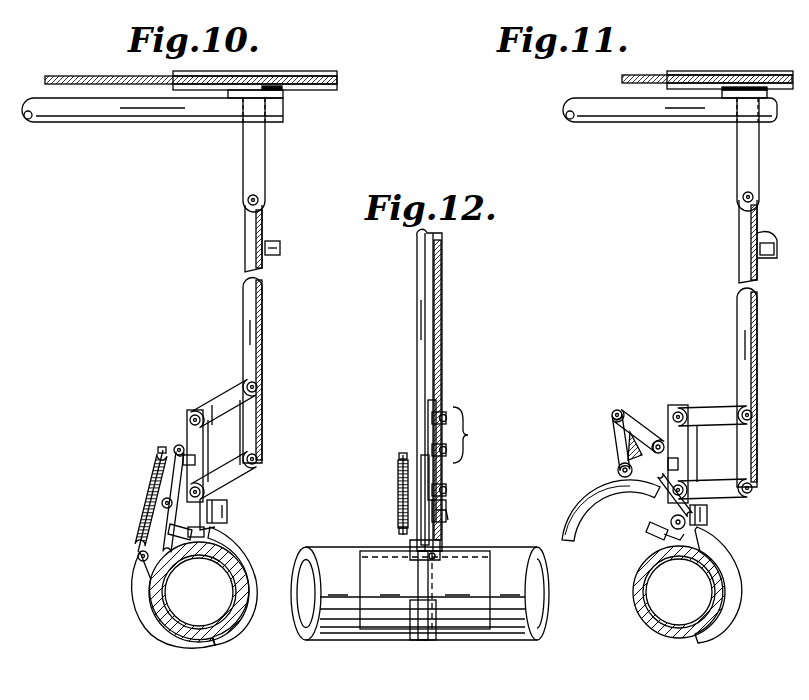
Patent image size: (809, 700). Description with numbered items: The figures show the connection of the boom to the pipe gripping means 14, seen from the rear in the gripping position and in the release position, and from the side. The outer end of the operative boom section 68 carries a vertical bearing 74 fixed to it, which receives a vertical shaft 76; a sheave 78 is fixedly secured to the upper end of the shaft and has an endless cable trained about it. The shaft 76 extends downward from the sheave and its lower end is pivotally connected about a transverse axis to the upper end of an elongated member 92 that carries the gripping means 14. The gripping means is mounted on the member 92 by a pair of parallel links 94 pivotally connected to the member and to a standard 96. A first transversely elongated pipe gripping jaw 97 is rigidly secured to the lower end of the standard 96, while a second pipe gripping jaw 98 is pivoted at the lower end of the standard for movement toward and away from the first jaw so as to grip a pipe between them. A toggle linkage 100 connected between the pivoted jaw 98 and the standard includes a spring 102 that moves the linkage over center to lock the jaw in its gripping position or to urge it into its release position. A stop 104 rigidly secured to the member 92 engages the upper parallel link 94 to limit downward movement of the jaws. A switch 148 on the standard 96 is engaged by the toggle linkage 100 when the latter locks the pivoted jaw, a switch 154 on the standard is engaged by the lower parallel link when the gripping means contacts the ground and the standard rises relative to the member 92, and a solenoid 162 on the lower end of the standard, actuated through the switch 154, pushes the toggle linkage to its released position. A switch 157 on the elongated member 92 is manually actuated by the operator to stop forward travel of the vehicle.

In FIG. 10, the gripping means 14 is at (236, 538).
In FIG. 12, the gripping means 14 is at (460, 541).
In FIG. 11, the gripping means 14 is at (732, 539).
In FIG. 10, the operative boom section 68 is at (66, 122).
In FIG. 11, the operative boom section 68 is at (600, 122).
In FIG. 10, the vertical bearing 74 is at (278, 98).
In FIG. 11, the vertical bearing 74 is at (736, 97).
In FIG. 10, the vertical shaft 76 is at (261, 169).
In FIG. 11, the vertical shaft 76 is at (746, 170).
In FIG. 10, the sheave 78 is at (322, 76).
In FIG. 11, the sheave 78 is at (700, 72).
In FIG. 10, the elongated member 92 is at (243, 255).
In FIG. 12, the elongated member 92 is at (432, 274).
In FIG. 11, the elongated member 92 is at (741, 327).
In FIG. 10, the parallel links 94 is at (214, 428).
In FIG. 12, the parallel links 94 is at (463, 450).
In FIG. 11, the parallel links 94 is at (693, 425).
In FIG. 10, the standard 96 is at (186, 436).
In FIG. 12, the standard 96 is at (420, 478).
In FIG. 11, the standard 96 is at (673, 404).
In FIG. 10, the first pipe gripping jaw 97 is at (242, 566).
In FIG. 12, the first pipe gripping jaw 97 is at (480, 578).
In FIG. 11, the first pipe gripping jaw 97 is at (733, 586).
In FIG. 10, the second pipe gripping jaw 98 is at (141, 581).
In FIG. 12, the second pipe gripping jaw 98 is at (428, 612).
In FIG. 11, the second pipe gripping jaw 98 is at (726, 563).
In FIG. 10, the toggle linkage 100 is at (160, 488).
In FIG. 12, the toggle linkage 100 is at (399, 521).
In FIG. 11, the toggle linkage 100 is at (615, 422).
In FIG. 10, the spring 102 is at (143, 516).
In FIG. 12, the spring 102 is at (399, 500).
In FIG. 11, the spring 102 is at (620, 450).
In FIG. 10, the stop 104 is at (258, 414).
In FIG. 11, the stop 104 is at (727, 447).
In FIG. 10, the switch 148 is at (162, 456).
In FIG. 11, the switch 148 is at (660, 498).
In FIG. 10, the switch 154 is at (226, 506).
In FIG. 12, the switch 154 is at (450, 512).
In FIG. 11, the switch 154 is at (707, 514).
In FIG. 10, the switch 157 is at (281, 248).
In FIG. 11, the switch 157 is at (757, 237).
In FIG. 10, the solenoid 162 is at (140, 549).
In FIG. 12, the solenoid 162 is at (438, 553).
In FIG. 11, the solenoid 162 is at (656, 537).